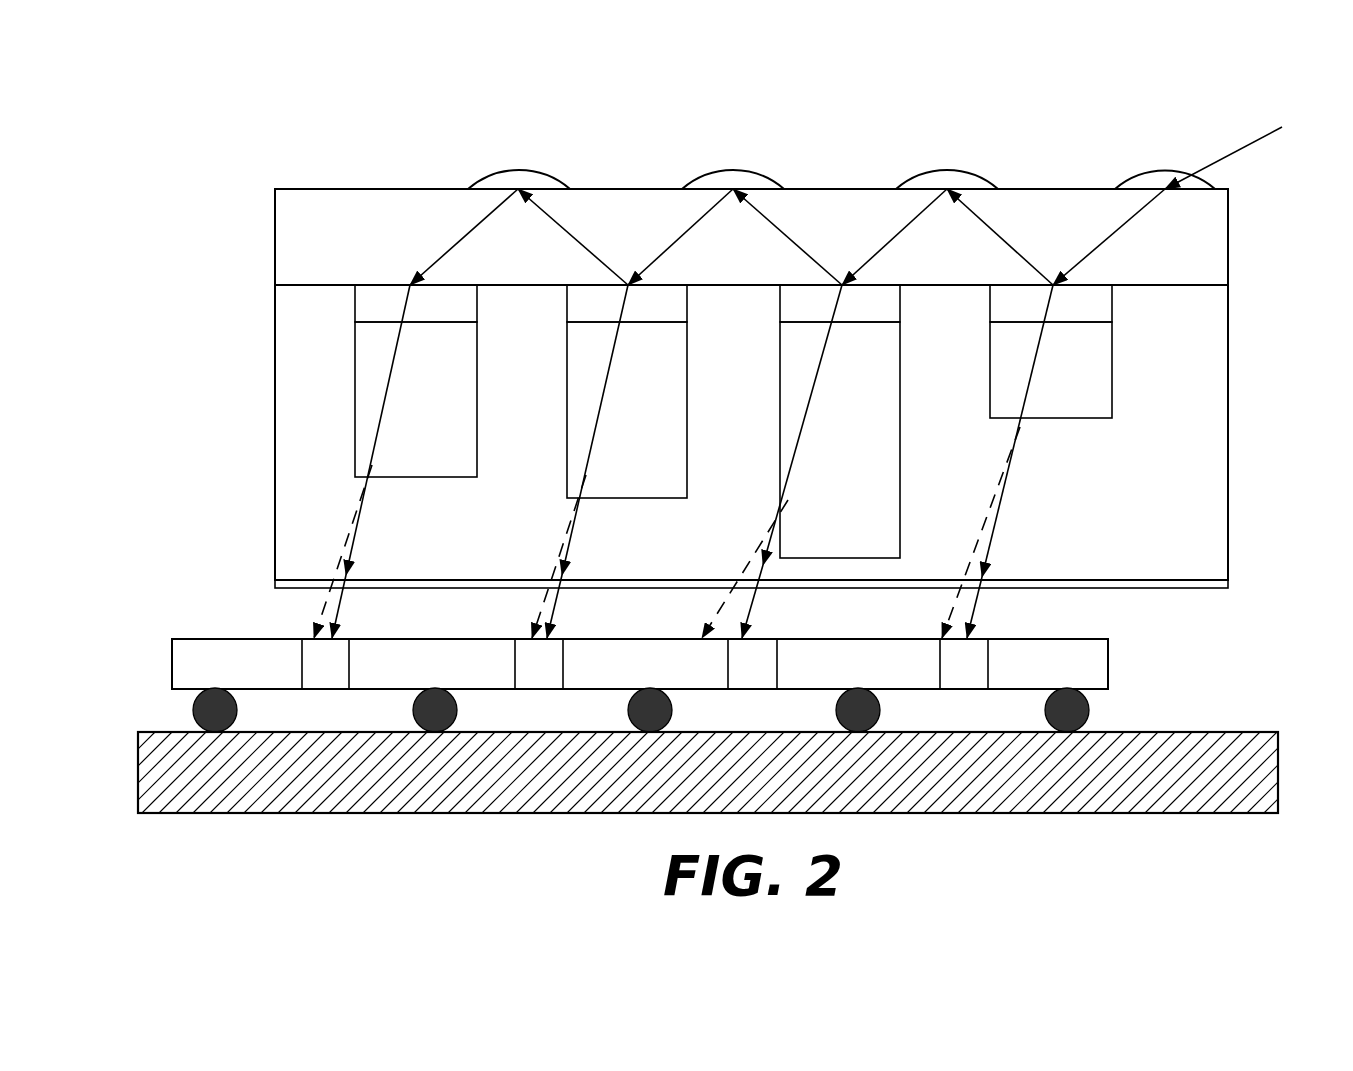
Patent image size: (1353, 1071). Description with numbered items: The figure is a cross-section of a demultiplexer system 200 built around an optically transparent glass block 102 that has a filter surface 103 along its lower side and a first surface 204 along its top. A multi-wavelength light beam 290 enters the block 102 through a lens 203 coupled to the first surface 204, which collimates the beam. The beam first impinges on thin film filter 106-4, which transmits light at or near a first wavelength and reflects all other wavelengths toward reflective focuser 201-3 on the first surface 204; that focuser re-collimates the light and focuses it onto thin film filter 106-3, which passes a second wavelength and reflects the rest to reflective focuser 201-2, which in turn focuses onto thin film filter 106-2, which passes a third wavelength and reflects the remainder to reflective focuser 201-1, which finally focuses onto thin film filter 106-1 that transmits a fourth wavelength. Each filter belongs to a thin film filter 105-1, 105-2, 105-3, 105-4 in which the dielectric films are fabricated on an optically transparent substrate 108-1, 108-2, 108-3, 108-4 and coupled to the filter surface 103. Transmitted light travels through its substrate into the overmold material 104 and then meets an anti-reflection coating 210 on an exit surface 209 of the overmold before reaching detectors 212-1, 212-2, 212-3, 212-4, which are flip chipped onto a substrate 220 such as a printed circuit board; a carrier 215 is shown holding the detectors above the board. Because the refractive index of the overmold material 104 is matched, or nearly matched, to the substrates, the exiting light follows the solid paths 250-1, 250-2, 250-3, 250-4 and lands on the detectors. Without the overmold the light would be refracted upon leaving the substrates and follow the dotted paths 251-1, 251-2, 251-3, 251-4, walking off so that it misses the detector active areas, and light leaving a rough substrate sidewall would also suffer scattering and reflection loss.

The demultiplexer system 200 is at (310, 118).
The optically transparent block 102 is at (275, 241).
The filter surface 103 is at (297, 284).
The overmold material 104 is at (275, 468).
The first surface 204 is at (305, 188).
The reflective focuser 201-1 is at (520, 170).
The reflective focuser 201-2 is at (735, 171).
The reflective focuser 201-3 is at (947, 170).
The lens 203 is at (1140, 176).
The multi-wavelength light beam 290 is at (1245, 140).
The thin film filter 105-1 is at (377, 381).
The thin film filter 105-2 is at (587, 391).
The thin film filter 105-3 is at (795, 421).
The thin film filter 105-4 is at (1009, 351).
The thin film filter 106-1 is at (472, 317).
The thin film filter 106-2 is at (688, 317).
The thin film filter 106-3 is at (898, 317).
The thin film filter 106-4 is at (1108, 317).
The substrate 108-1 is at (416, 399).
The substrate 108-2 is at (627, 410).
The substrate 108-3 is at (840, 440).
The substrate 108-4 is at (1051, 370).
The exit surface 209 is at (407, 579).
The anti-reflection coating 210 is at (277, 590).
The substrate 215 is at (200, 639).
The detector 212-1 is at (318, 662).
The detector 212-2 is at (530, 663).
The detector 212-3 is at (750, 662).
The detector 212-4 is at (965, 663).
The path 250-1 is at (357, 548).
The path 250-2 is at (570, 548).
The path 250-3 is at (766, 572).
The path 250-4 is at (1003, 503).
The dotted path 251-1 is at (343, 558).
The dotted path 251-2 is at (557, 565).
The dotted path 251-3 is at (740, 578).
The dotted path 251-4 is at (993, 497).
The substrate 220 is at (375, 807).